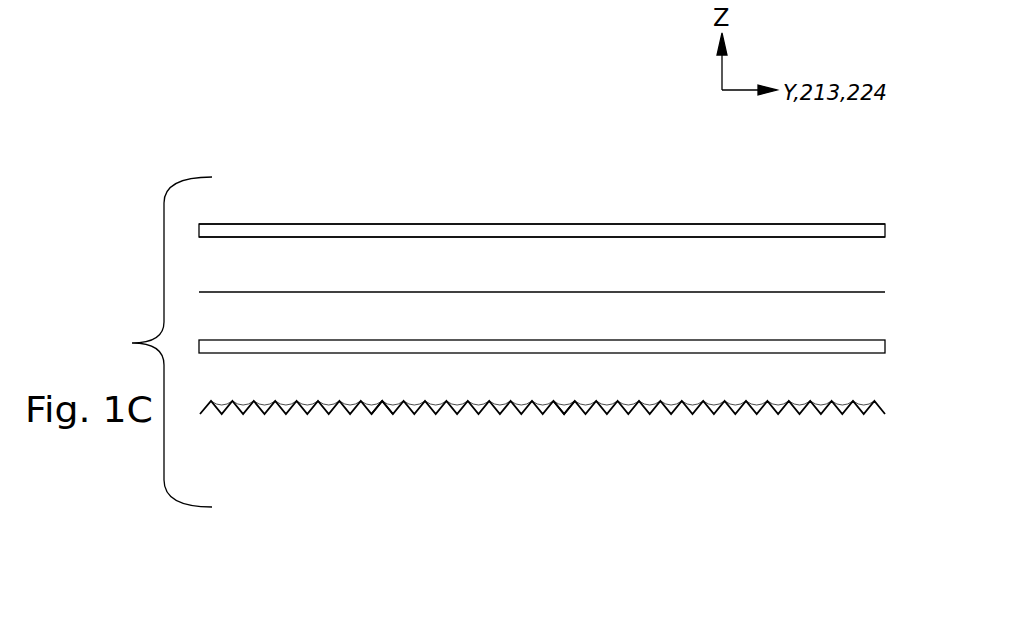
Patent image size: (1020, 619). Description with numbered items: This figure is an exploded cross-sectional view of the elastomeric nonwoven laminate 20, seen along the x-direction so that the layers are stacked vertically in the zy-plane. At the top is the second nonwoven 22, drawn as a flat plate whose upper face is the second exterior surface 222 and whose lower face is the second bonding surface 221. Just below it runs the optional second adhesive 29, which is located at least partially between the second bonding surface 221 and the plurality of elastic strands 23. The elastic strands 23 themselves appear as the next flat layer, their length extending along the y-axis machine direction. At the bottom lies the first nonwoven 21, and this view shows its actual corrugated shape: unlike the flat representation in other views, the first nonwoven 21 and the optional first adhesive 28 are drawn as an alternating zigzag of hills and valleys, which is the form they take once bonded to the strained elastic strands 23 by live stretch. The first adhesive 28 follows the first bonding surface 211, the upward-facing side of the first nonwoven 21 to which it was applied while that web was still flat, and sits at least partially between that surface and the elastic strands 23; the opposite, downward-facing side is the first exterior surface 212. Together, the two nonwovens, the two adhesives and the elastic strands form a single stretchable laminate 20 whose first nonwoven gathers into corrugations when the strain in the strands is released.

The elastomeric nonwoven laminate 20 is at (551, 163).
The first nonwoven 21 is at (263, 415).
The first bonding surface 211 is at (384, 402).
The first exterior surface 212 is at (555, 415).
The second nonwoven 22 is at (427, 232).
The second bonding surface 221 is at (657, 238).
The second exterior surface 222 is at (657, 224).
The elastic strands 23 is at (416, 340).
The first adhesive 28 is at (220, 402).
The second adhesive 29 is at (418, 291).